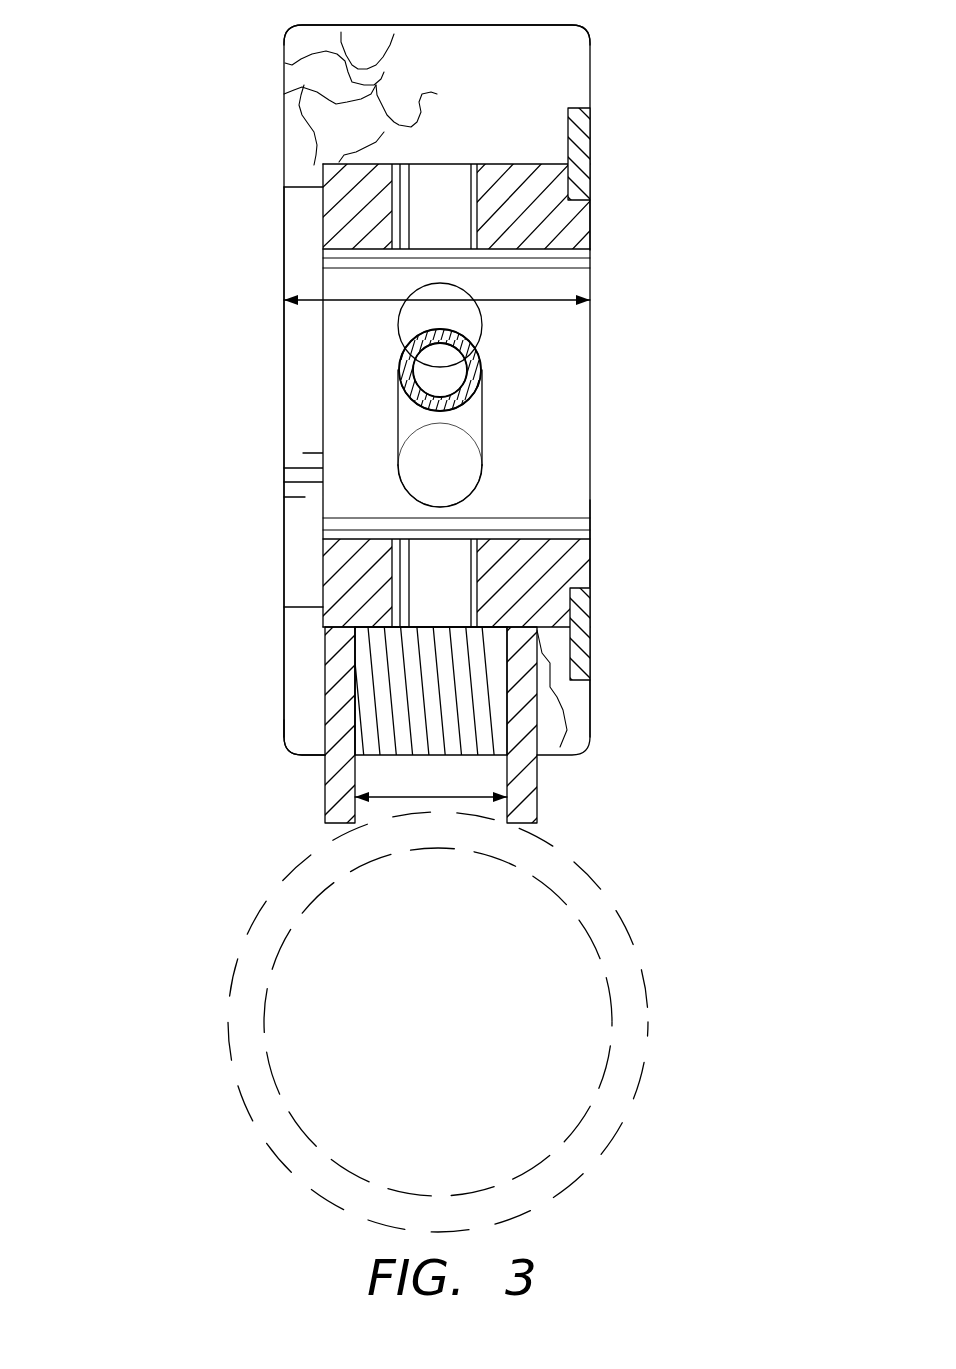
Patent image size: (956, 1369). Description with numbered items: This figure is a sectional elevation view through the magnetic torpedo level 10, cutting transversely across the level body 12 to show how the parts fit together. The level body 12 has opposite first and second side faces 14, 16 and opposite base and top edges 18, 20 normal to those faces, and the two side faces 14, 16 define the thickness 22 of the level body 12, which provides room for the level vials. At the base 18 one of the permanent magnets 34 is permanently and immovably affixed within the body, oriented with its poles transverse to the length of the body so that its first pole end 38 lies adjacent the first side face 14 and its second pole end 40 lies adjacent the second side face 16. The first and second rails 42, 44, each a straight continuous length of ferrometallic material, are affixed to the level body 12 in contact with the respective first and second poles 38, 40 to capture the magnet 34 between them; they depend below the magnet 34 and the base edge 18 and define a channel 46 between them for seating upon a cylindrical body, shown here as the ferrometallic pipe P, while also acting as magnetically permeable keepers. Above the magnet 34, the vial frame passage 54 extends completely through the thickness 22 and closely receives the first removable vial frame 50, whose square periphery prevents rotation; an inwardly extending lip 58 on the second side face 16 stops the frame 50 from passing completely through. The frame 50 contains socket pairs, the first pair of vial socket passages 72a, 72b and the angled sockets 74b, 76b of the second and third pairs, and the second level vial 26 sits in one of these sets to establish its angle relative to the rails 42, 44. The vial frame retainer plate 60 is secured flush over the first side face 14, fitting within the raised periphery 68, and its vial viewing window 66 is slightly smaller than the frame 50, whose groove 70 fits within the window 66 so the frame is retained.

The magnetic torpedo level 10 is at (143, 692).
The level body 12 is at (284, 93).
The first side face 14 is at (590, 72).
The second side face 16 is at (284, 630).
The base edge 18 is at (313, 758).
The top edge 20 is at (560, 26).
The thickness 22 is at (352, 305).
The second level vial 26 is at (398, 387).
The magnets 34 is at (449, 709).
The first pole ends 38 is at (507, 708).
The second pole ends 40 is at (348, 693).
The first rail 42 is at (567, 707).
The second rail 44 is at (325, 673).
The channel 46 is at (434, 800).
The first removable vial frame 50 is at (590, 562).
The vial frame passage 54 is at (347, 613).
The lip 58 is at (313, 605).
The vial frame retainer plate 60 is at (590, 138).
The vial viewing window 66 is at (590, 208).
The raised periphery 68 is at (585, 680).
The groove 70 is at (580, 590).
The vial socket passage 72a is at (462, 222).
The vial socket passage 72b is at (462, 605).
The vial socket passage 74b is at (483, 327).
The vial socket passage 76b is at (480, 470).
The ferrometallic pipe P is at (237, 1090).